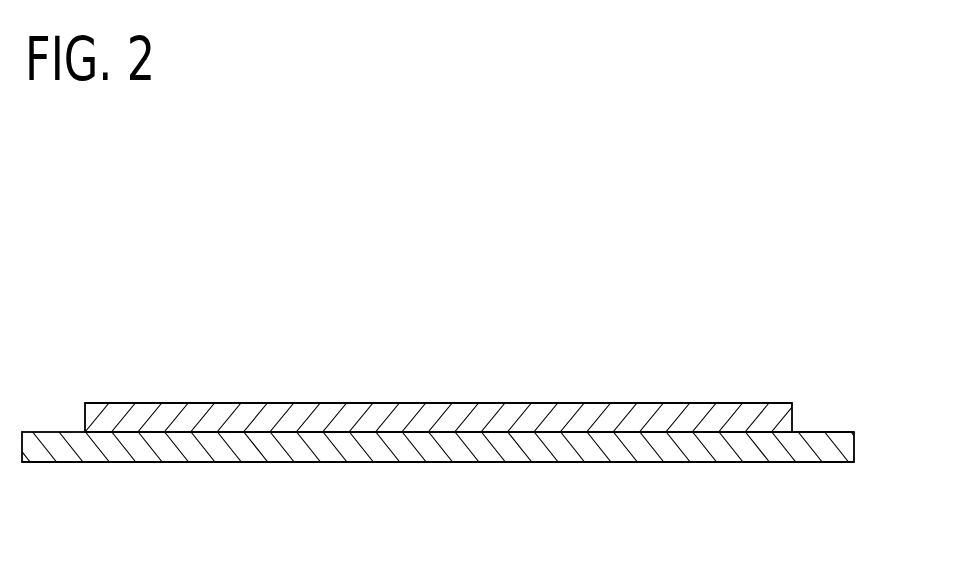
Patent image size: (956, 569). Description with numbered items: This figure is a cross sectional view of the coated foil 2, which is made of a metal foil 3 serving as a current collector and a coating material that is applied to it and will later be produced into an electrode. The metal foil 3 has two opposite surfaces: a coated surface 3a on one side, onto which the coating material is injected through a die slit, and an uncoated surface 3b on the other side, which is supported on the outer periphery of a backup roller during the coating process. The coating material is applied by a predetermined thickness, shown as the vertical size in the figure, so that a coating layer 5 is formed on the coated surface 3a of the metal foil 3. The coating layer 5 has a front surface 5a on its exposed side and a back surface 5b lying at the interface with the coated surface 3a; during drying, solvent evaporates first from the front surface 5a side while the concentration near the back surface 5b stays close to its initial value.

The coated foil 2 is at (580, 255).
The coating layer 5 is at (593, 415).
The front surface 5a is at (678, 403).
The back surface 5b is at (679, 433).
The metal foil 3 is at (848, 432).
The coated surface 3a is at (810, 432).
The uncoated surface 3b is at (810, 463).